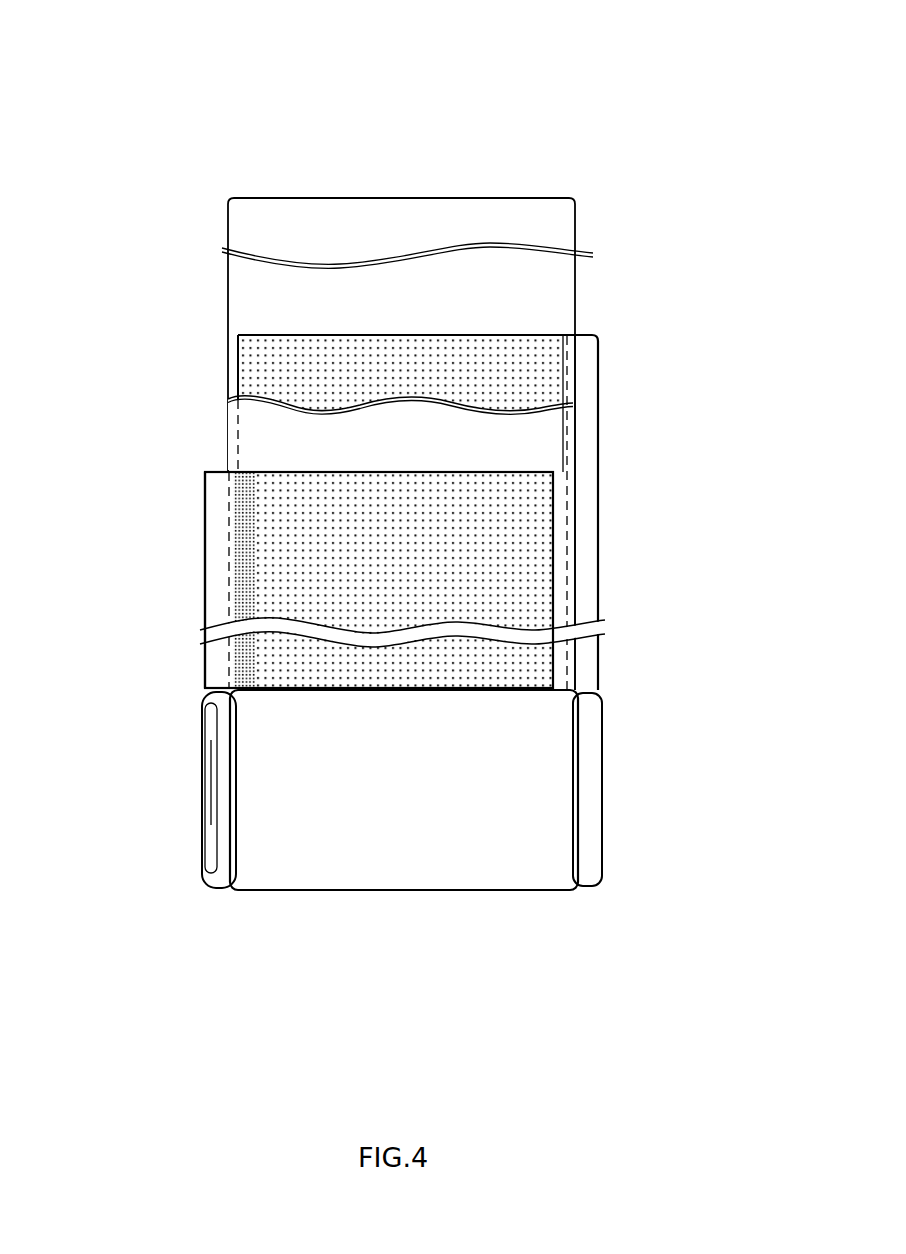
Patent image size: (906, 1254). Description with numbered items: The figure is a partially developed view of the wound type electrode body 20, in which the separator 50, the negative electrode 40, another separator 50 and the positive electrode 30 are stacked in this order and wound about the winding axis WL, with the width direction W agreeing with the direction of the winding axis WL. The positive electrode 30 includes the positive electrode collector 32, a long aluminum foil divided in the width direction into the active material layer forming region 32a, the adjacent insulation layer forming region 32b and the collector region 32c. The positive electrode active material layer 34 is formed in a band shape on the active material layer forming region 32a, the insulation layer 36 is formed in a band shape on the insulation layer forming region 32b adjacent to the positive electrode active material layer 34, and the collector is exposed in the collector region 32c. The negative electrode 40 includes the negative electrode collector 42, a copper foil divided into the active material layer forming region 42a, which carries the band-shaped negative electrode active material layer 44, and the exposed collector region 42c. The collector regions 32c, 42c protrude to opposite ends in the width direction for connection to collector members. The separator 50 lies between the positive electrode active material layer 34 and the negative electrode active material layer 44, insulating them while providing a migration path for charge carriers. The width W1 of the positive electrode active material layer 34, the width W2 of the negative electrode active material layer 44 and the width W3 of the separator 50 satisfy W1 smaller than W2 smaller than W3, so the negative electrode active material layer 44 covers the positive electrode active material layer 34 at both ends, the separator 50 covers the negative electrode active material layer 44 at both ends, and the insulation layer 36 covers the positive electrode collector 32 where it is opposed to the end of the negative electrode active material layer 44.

The wound type electrode body 20 is at (633, 180).
The positive electrode 30 is at (357, 579).
The positive electrode collector 32 is at (318, 579).
The active material layer forming region 32a is at (316, 580).
The insulation layer forming region 32b is at (143, 580).
The collector region 32c is at (215, 612).
The positive electrode active material layer 34 is at (285, 572).
The insulation layer 36 is at (243, 588).
The negative electrode 40 is at (474, 486).
The negative electrode collector 42 is at (598, 517).
The active material layer forming region 42a is at (474, 377).
The collector region 42c is at (585, 465).
The negative electrode active material layer 44 is at (497, 365).
The separator 50 is at (228, 307).
The winding axis WL is at (108, 788).
The width direction W is at (485, 992).
The width of the positive electrode active material layer W1 is at (550, 472).
The width of the negative electrode active material layer W2 is at (562, 335).
The width of the separator W3 is at (571, 198).